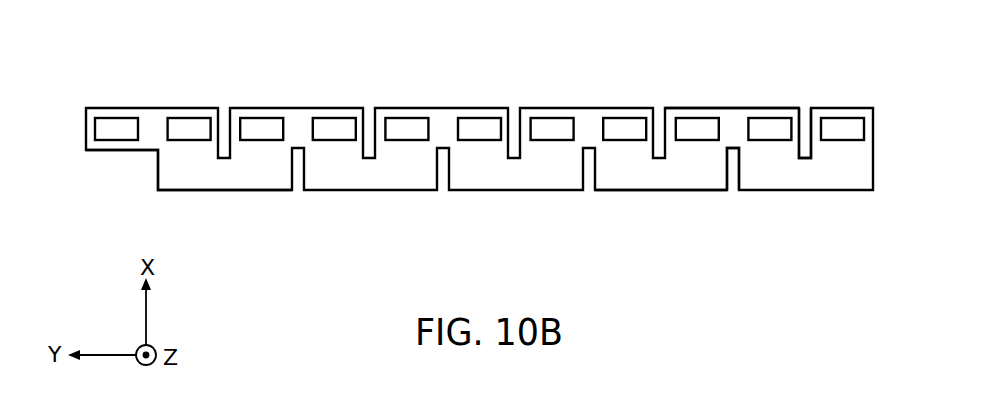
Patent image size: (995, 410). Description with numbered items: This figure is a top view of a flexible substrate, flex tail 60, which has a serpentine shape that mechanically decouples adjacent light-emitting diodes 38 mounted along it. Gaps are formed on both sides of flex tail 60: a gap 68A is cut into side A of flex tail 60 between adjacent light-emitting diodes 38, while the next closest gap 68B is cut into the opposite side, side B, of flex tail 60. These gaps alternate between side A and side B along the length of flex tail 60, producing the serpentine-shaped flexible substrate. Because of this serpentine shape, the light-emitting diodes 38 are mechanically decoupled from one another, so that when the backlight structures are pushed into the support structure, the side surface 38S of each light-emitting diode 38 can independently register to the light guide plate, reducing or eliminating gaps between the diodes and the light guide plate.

The light-emitting diode 38 is at (260, 125).
The side surface 38S is at (479, 150).
The flex tail 60 is at (181, 175).
The gap 68A is at (807, 96).
The gap 68B is at (736, 199).
The side A is at (713, 72).
The side B is at (719, 248).